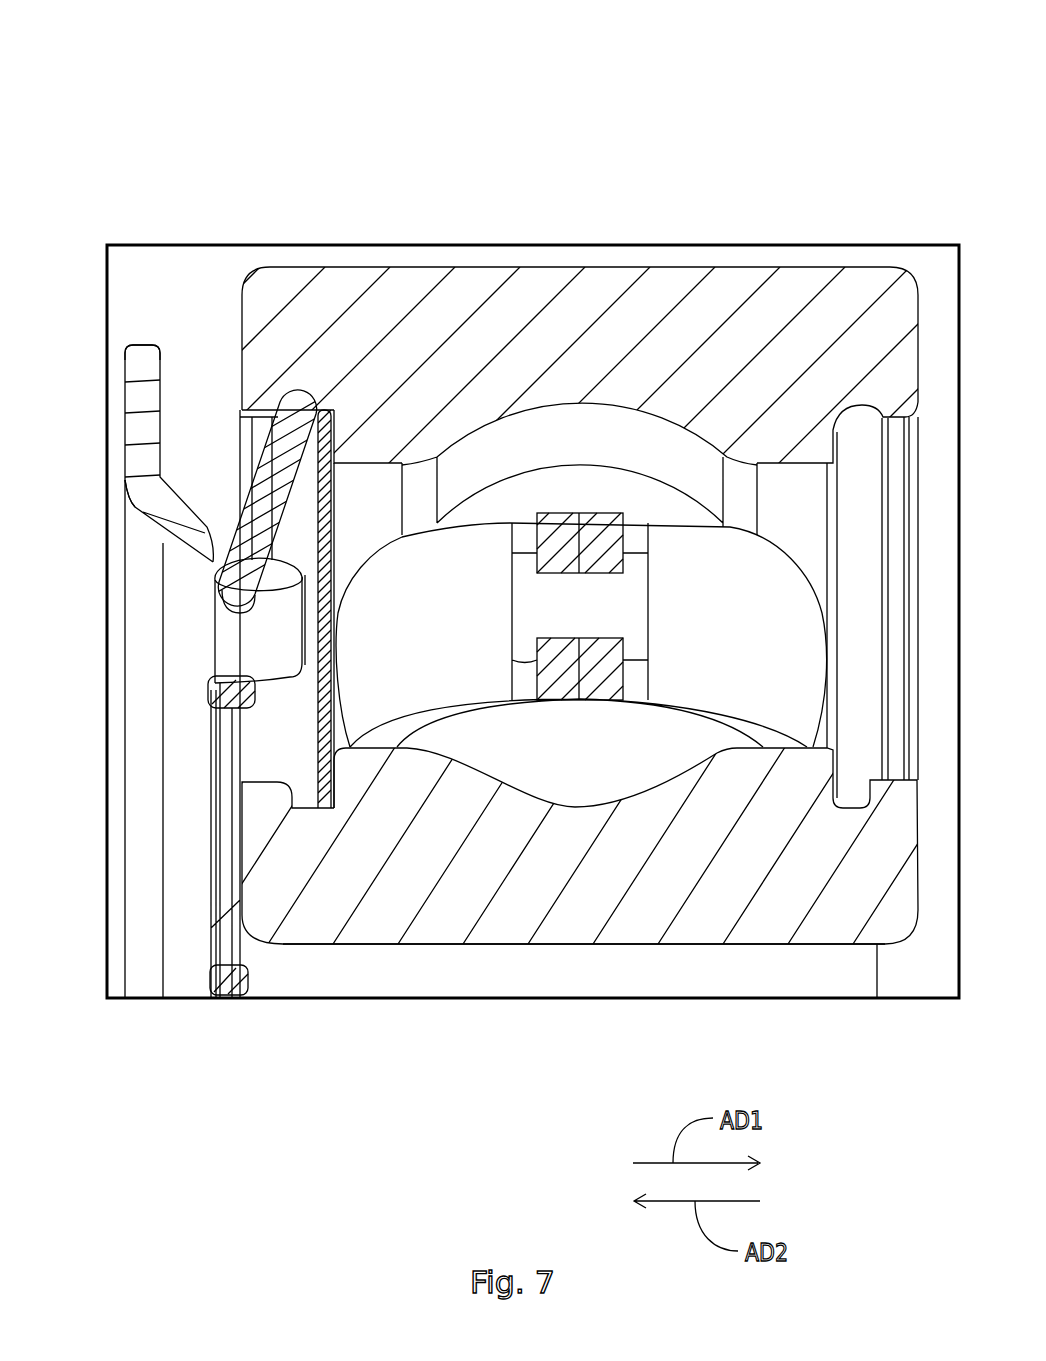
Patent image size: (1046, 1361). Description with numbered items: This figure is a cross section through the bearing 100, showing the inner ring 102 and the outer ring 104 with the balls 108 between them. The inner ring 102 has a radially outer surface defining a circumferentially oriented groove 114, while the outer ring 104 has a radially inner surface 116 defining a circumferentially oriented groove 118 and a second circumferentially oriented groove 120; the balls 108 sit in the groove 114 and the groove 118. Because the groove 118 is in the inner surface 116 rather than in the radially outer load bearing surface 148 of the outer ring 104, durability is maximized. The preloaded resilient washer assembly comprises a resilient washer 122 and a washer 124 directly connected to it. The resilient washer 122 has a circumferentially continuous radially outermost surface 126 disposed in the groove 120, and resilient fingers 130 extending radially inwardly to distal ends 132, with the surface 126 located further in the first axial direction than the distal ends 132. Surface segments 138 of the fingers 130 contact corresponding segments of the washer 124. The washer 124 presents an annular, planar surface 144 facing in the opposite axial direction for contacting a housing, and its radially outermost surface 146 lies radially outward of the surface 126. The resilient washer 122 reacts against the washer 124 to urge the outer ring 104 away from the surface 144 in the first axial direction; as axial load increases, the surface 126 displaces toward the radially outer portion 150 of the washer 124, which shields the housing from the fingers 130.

The bearing 100 is at (827, 80).
The inner ring 102 is at (693, 950).
The outer ring 104 is at (837, 262).
The balls 108 is at (608, 490).
The circumferentially oriented groove 114 is at (505, 797).
The radially inner surface 116 is at (503, 415).
The circumferentially oriented groove 118 is at (469, 458).
The circumferentially oriented groove 120 is at (272, 410).
The resilient washer 122 is at (254, 472).
The washer 124 is at (133, 527).
The radially outermost surface 126 is at (322, 409).
The resilient fingers 130 is at (216, 565).
The distal ends 132 is at (232, 632).
The surface segments 138 is at (219, 580).
The annular surface 144 is at (116, 418).
The radially outermost surface 146 is at (137, 343).
The radially outer load bearing surface 148 is at (748, 268).
The radially outer portion 150 is at (116, 428).